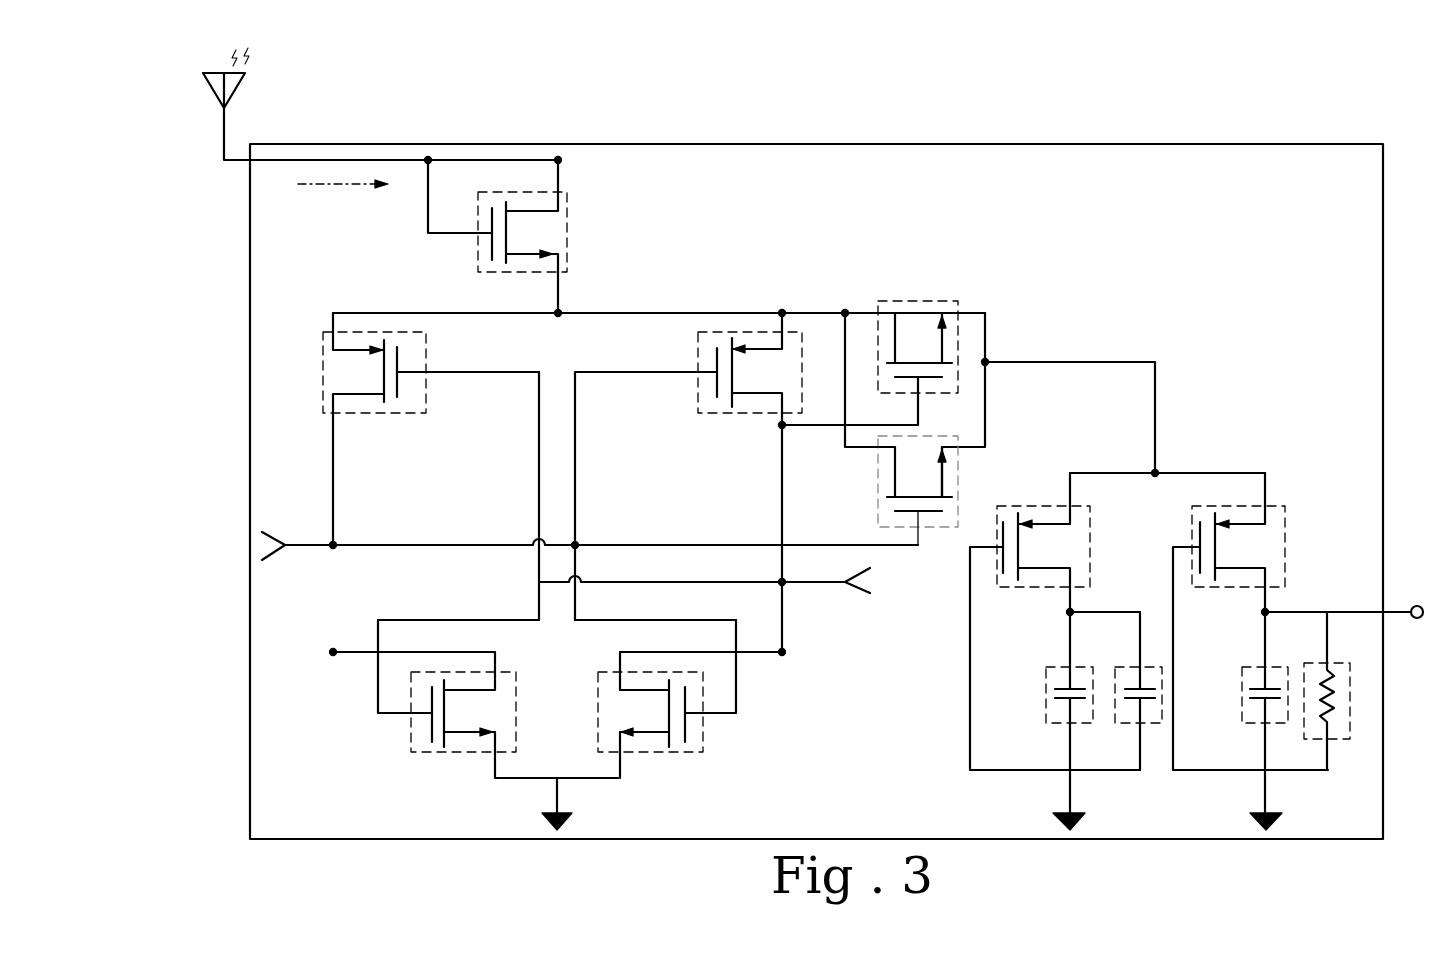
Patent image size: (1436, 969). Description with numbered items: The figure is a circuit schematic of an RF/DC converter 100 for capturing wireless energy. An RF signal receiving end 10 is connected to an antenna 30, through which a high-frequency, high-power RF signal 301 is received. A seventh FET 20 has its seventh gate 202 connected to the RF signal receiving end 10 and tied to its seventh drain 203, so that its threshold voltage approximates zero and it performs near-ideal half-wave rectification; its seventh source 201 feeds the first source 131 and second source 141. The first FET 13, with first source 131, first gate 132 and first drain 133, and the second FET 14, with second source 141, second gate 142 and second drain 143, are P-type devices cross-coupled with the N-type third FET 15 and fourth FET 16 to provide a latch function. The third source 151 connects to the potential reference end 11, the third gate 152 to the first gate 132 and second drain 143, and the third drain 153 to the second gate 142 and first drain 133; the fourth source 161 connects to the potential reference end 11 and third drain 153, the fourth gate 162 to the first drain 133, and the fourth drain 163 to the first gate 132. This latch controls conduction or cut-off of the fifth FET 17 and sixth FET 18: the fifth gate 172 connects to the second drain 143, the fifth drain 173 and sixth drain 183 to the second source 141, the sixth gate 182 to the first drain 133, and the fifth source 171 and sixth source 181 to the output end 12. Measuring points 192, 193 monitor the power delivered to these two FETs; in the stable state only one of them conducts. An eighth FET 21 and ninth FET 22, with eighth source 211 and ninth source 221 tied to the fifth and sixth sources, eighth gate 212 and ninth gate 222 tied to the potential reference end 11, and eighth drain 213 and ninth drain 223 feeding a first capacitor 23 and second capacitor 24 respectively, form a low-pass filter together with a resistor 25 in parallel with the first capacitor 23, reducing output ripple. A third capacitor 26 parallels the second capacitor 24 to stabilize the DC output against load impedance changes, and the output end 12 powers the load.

The RF/DC converter 100 is at (1162, 144).
The antenna 30 is at (206, 85).
The RF signal receiving end 10 is at (237, 164).
The RF signal 301 is at (305, 182).
The seventh FET 20 is at (545, 206).
The seventh source 201 is at (560, 293).
The seventh gate 202 is at (438, 232).
The seventh drain 203 is at (560, 177).
The first FET 13 is at (364, 410).
The first source 131 is at (330, 347).
The first gate 132 is at (398, 368).
The first drain 133 is at (323, 404).
The second FET 14 is at (688, 444).
The second source 141 is at (780, 345).
The second gate 142 is at (708, 370).
The second drain 143 is at (780, 400).
The third FET 15 is at (464, 695).
The third source 151 is at (493, 742).
The third gate 152 is at (397, 712).
The third drain 153 is at (490, 690).
The fourth FET 16 is at (701, 697).
The fourth source 161 is at (630, 745).
The fourth gate 162 is at (728, 706).
The fourth drain 163 is at (622, 690).
The fifth FET 17 is at (960, 361).
The fifth source 171 is at (945, 308).
The fifth gate 172 is at (920, 380).
The fifth drain 173 is at (893, 308).
The sixth FET 18 is at (933, 429).
The sixth source 181 is at (955, 450).
The sixth gate 182 is at (900, 513).
The sixth drain 183 is at (887, 448).
The measuring point 192 is at (825, 586).
The measuring point 193 is at (313, 549).
The potential reference end 11 is at (560, 797).
The eighth FET 21 is at (1262, 590).
The eighth source 211 is at (1268, 522).
The eighth gate 212 is at (1180, 545).
The eighth drain 213 is at (1263, 600).
The ninth FET 22 is at (1041, 621).
The ninth source 221 is at (1075, 524).
The ninth gate 222 is at (972, 568).
The ninth drain 223 is at (1068, 600).
The first capacitor 23 is at (1243, 702).
The second capacitor 24 is at (1045, 702).
The resistor 25 is at (1345, 742).
The third capacitor 26 is at (1158, 725).
The output end 12 is at (1418, 604).